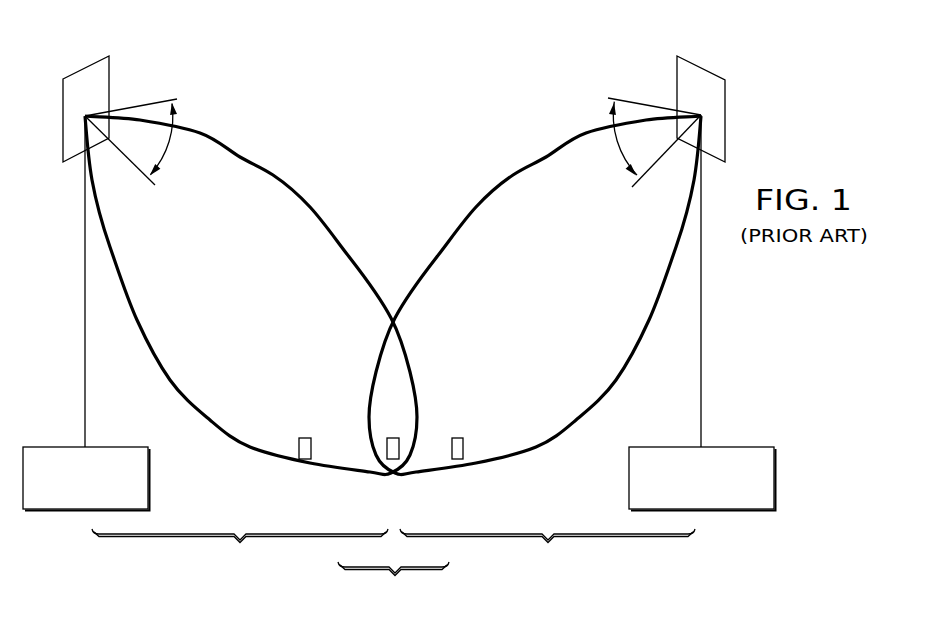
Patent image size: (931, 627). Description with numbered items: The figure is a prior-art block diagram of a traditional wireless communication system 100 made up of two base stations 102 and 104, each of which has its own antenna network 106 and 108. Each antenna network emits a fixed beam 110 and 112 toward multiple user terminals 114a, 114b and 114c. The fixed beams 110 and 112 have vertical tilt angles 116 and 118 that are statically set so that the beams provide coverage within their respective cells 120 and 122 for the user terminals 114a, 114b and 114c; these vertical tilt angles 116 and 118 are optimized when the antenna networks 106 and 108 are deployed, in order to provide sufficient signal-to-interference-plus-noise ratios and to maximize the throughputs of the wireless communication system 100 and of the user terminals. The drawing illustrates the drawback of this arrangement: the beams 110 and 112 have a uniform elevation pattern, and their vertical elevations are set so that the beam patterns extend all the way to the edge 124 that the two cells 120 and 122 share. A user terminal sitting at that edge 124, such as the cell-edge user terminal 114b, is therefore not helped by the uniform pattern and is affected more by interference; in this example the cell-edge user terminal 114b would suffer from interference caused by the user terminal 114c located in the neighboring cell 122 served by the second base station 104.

The wireless communication system 100 is at (266, 72).
The base station 102 is at (42, 511).
The base station 104 is at (748, 511).
The antenna network 106 is at (85, 64).
The antenna network 108 is at (700, 64).
The fixed beam 110 is at (275, 175).
The fixed beam 112 is at (512, 176).
The user terminal 114a is at (300, 436).
The user terminal 114b is at (390, 462).
The user terminal 114c is at (461, 436).
The vertical tilt angle 116 is at (167, 148).
The vertical tilt angle 118 is at (619, 148).
The cell 120 is at (240, 551).
The cell 122 is at (547, 551).
The edge 124 is at (393, 583).